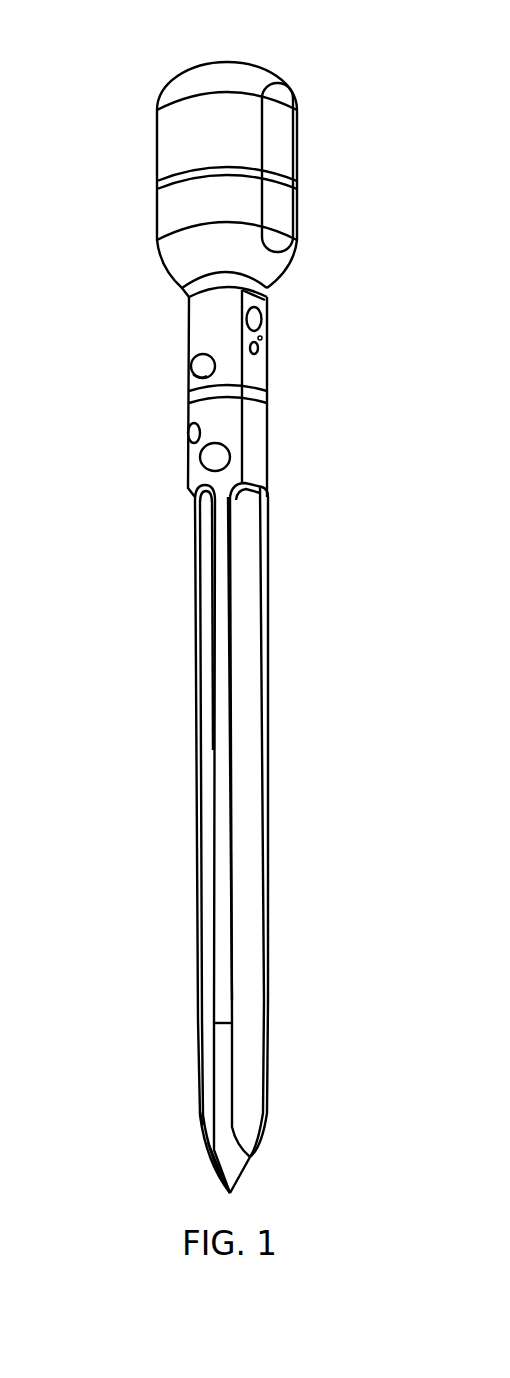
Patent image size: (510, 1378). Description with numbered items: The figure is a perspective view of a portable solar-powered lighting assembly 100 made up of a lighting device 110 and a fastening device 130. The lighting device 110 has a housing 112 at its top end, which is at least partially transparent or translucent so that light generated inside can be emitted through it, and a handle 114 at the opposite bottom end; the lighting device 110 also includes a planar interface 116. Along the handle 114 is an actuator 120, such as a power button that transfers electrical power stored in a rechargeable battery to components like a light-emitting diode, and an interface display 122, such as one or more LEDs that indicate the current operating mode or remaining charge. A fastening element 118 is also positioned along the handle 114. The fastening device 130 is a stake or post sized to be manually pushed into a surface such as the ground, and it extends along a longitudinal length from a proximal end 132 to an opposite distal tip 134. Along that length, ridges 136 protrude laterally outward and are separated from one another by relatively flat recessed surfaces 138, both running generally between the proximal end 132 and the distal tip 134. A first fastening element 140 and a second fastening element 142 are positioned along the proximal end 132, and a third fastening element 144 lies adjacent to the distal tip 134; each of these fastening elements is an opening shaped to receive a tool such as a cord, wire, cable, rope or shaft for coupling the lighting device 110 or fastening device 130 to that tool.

The solar-powered lighting assembly 100 is at (109, 90).
The lighting device 110 is at (139, 163).
The housing 112 is at (215, 73).
The handle 114 is at (258, 377).
The planar interface 116 is at (282, 120).
The fastening element 118 is at (192, 362).
The actuator 120 is at (263, 313).
The interface display 122 is at (258, 348).
The fastening device 130 is at (136, 635).
The proximal end 132 is at (255, 432).
The distal tip 134 is at (238, 1160).
The ridges 136 is at (200, 953).
The recessed surfaces 138 is at (255, 695).
The first fastening element 140 is at (199, 458).
The second fastening element 142 is at (190, 430).
The third fastening element 144 is at (202, 1122).